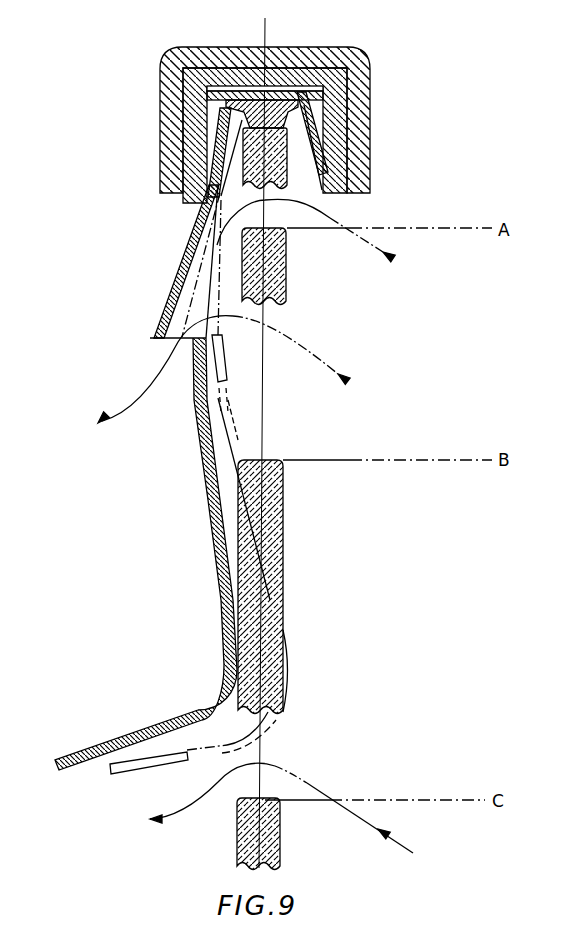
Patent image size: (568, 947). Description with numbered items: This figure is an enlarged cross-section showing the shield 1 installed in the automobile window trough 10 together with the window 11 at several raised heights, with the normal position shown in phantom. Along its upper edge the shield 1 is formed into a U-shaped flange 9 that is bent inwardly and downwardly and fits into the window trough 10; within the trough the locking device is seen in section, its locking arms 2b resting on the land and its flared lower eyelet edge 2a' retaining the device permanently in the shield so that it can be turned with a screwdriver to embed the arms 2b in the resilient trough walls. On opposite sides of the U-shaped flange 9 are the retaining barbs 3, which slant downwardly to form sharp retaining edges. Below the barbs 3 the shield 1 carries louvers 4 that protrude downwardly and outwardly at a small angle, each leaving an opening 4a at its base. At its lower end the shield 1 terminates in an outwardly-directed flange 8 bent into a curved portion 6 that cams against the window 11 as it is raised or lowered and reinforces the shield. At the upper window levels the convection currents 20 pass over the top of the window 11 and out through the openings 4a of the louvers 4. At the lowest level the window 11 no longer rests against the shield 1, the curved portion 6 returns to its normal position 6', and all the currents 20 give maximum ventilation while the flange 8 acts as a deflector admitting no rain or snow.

The shield 1 is at (203, 498).
The flared lower edge portion of the eyelet 2a' is at (292, 188).
The locking arms 2b is at (300, 92).
The retaining barbs 3 is at (212, 133).
The louvers 4 is at (176, 278).
The opening 4a is at (183, 340).
The curved portion 6 is at (207, 691).
The normal position of the curved portion 6' is at (299, 671).
The outwardly-directed flange 8 is at (78, 755).
The U-shaped flange 9 is at (212, 168).
The window trough 10 is at (228, 80).
The window 11 is at (283, 550).
The convection currents 20 is at (387, 255).